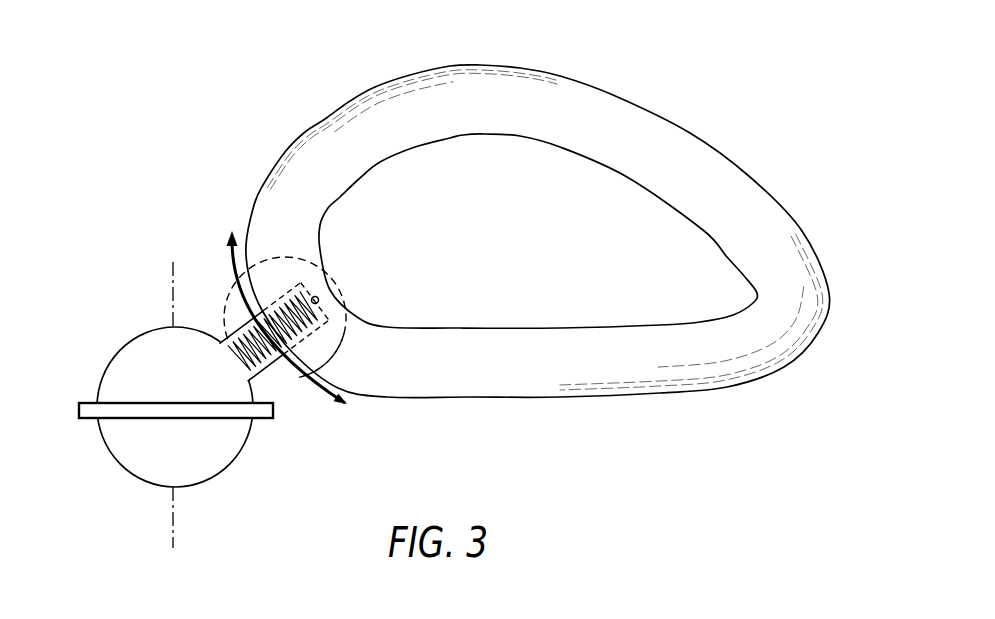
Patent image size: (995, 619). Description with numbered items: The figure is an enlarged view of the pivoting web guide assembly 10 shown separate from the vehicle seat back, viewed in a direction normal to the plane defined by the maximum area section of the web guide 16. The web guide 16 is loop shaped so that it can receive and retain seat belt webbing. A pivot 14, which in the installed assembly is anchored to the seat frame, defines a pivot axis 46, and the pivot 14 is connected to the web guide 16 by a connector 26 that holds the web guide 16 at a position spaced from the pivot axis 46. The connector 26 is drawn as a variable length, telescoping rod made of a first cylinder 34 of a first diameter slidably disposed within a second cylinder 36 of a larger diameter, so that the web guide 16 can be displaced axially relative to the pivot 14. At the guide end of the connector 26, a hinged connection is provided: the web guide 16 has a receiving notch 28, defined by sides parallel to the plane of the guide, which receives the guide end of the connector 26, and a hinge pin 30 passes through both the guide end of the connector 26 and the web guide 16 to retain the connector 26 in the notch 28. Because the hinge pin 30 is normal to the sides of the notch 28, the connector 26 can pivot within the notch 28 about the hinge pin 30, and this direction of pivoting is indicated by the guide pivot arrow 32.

The pivoting web guide assembly 10 is at (148, 100).
The web guide 16 is at (612, 95).
The pivot 14 is at (106, 347).
The pivot axis 46 is at (172, 285).
The connector 26 is at (230, 326).
The second cylinder 36 is at (235, 316).
The hinge pin 30 is at (318, 295).
The first cylinder 34 is at (343, 317).
The receiving notch 28 is at (338, 362).
The guide pivot arrow 32 is at (316, 392).